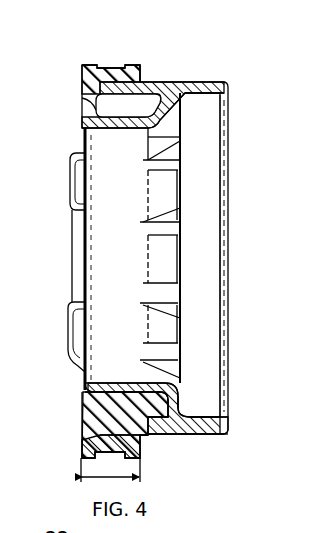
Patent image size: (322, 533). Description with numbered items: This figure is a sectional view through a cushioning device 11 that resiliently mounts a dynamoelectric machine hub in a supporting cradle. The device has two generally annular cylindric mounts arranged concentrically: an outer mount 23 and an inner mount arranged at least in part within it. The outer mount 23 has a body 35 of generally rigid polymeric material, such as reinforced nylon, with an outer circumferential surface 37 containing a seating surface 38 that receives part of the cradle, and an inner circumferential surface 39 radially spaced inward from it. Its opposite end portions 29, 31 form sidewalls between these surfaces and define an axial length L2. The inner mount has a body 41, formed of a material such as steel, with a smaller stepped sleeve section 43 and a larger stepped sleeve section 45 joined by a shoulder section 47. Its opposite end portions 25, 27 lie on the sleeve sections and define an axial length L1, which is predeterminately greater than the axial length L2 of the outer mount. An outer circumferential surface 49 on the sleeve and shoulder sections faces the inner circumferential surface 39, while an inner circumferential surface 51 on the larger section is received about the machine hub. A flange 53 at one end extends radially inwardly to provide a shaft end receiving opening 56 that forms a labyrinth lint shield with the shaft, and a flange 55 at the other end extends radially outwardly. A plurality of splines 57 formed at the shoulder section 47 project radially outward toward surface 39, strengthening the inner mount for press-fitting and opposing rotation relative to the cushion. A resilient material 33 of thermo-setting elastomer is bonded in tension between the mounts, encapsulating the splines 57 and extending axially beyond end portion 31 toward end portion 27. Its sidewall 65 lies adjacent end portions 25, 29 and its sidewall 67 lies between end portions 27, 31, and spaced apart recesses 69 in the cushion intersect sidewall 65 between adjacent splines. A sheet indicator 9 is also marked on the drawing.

The cushioning device 11 is at (231, 62).
The outer mount 23 is at (66, 70).
The opposite end portion 25 is at (82, 137).
The opposite end portion 27 is at (230, 107).
The opposite end portion 29 is at (82, 69).
The opposite end portion 31 is at (142, 71).
The resilient material 33 is at (170, 433).
The body 35 is at (130, 64).
The outer circumferential surface 37 is at (88, 64).
The seating surface 38 is at (110, 66).
The inner circumferential surface 39 is at (104, 101).
The body 41 is at (218, 163).
The stepped sleeve section 43 is at (97, 383).
The stepped sleeve section 45 is at (198, 417).
The shoulder section 47 is at (178, 395).
The outer circumferential surface 49 is at (88, 391).
The inner circumferential surface 51 is at (229, 416).
The flange 53 is at (80, 378).
The flange 55 is at (221, 433).
The shaft end receiving opening 56 is at (73, 218).
The splines 57 is at (178, 231).
The opposite sidewall 65 is at (82, 422).
The opposite sidewall 67 is at (154, 434).
The recesses 69 is at (98, 114).
The sheet 9 is at (48, 314).
The axial length L1 is at (263, 378).
The axial length L2 is at (100, 488).